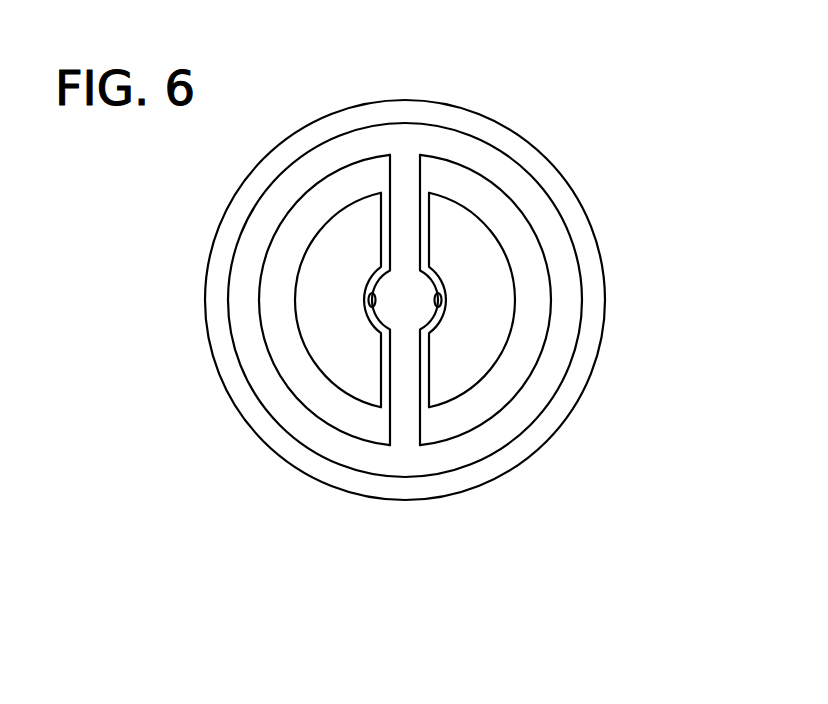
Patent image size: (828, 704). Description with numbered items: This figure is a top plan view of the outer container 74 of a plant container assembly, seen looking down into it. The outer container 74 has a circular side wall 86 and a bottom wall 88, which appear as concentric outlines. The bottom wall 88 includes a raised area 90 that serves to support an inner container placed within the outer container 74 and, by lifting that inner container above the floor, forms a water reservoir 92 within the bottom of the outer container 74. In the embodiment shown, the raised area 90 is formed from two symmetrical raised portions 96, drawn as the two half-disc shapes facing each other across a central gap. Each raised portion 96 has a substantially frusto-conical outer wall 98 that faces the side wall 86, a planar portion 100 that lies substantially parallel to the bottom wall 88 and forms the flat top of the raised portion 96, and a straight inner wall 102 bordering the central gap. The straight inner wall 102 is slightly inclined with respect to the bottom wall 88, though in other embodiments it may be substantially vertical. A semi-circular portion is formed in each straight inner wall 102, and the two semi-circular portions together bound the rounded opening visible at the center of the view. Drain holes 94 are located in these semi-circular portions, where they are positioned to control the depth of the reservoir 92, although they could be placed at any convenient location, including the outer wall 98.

The outer container 74 is at (619, 268).
The side wall 86 is at (580, 402).
The bottom wall 88 is at (550, 220).
The raised area 90 is at (404, 147).
The water reservoir 92 is at (566, 323).
The drain holes 94 is at (369, 300).
The raised portions 96 is at (349, 188).
The frusto-conical outer wall 98 is at (297, 371).
The planar portion 100 is at (357, 353).
The straight inner wall 102 is at (390, 213).